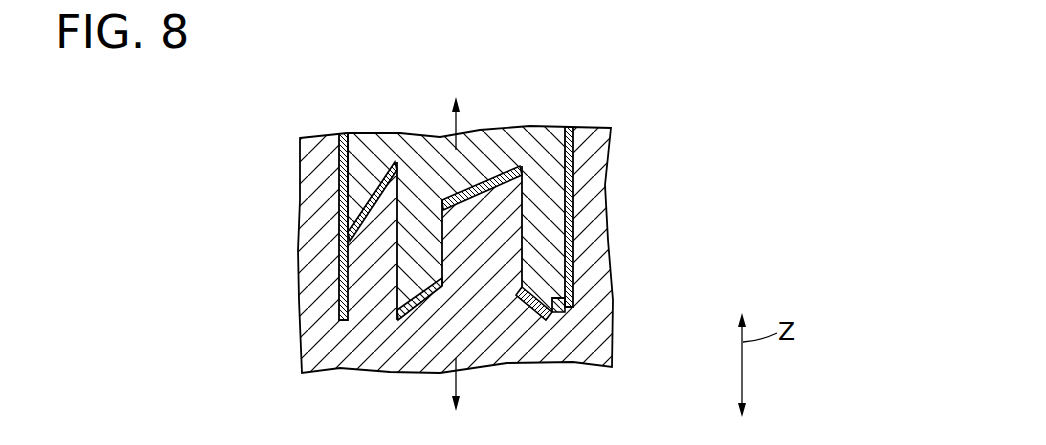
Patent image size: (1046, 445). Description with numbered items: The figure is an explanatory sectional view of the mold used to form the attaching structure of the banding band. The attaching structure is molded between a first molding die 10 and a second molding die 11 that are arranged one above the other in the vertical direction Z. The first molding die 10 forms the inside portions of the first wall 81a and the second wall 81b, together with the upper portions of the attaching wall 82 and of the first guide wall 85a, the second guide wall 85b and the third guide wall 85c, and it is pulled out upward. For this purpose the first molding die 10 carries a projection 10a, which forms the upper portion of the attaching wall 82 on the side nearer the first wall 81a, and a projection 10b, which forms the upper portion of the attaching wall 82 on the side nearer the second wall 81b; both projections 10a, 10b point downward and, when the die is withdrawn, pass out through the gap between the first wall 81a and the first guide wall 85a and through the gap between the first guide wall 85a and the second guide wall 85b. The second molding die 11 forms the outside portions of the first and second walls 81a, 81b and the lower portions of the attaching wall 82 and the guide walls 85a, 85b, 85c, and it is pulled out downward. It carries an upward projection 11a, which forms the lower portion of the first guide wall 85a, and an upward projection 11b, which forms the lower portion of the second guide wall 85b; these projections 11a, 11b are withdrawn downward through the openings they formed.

The first molding die 10 is at (546, 140).
The projection 10a is at (548, 246).
The projection 10b is at (410, 273).
The second molding die 11 is at (555, 337).
The projection 11a is at (505, 218).
The projection 11b is at (358, 260).
The first wall 81a is at (573, 185).
The second wall 81b is at (340, 192).
The attaching wall 82 is at (412, 300).
The first guide wall 85a is at (500, 170).
The second guide wall 85b is at (366, 205).
The third guide wall 85c is at (560, 310).